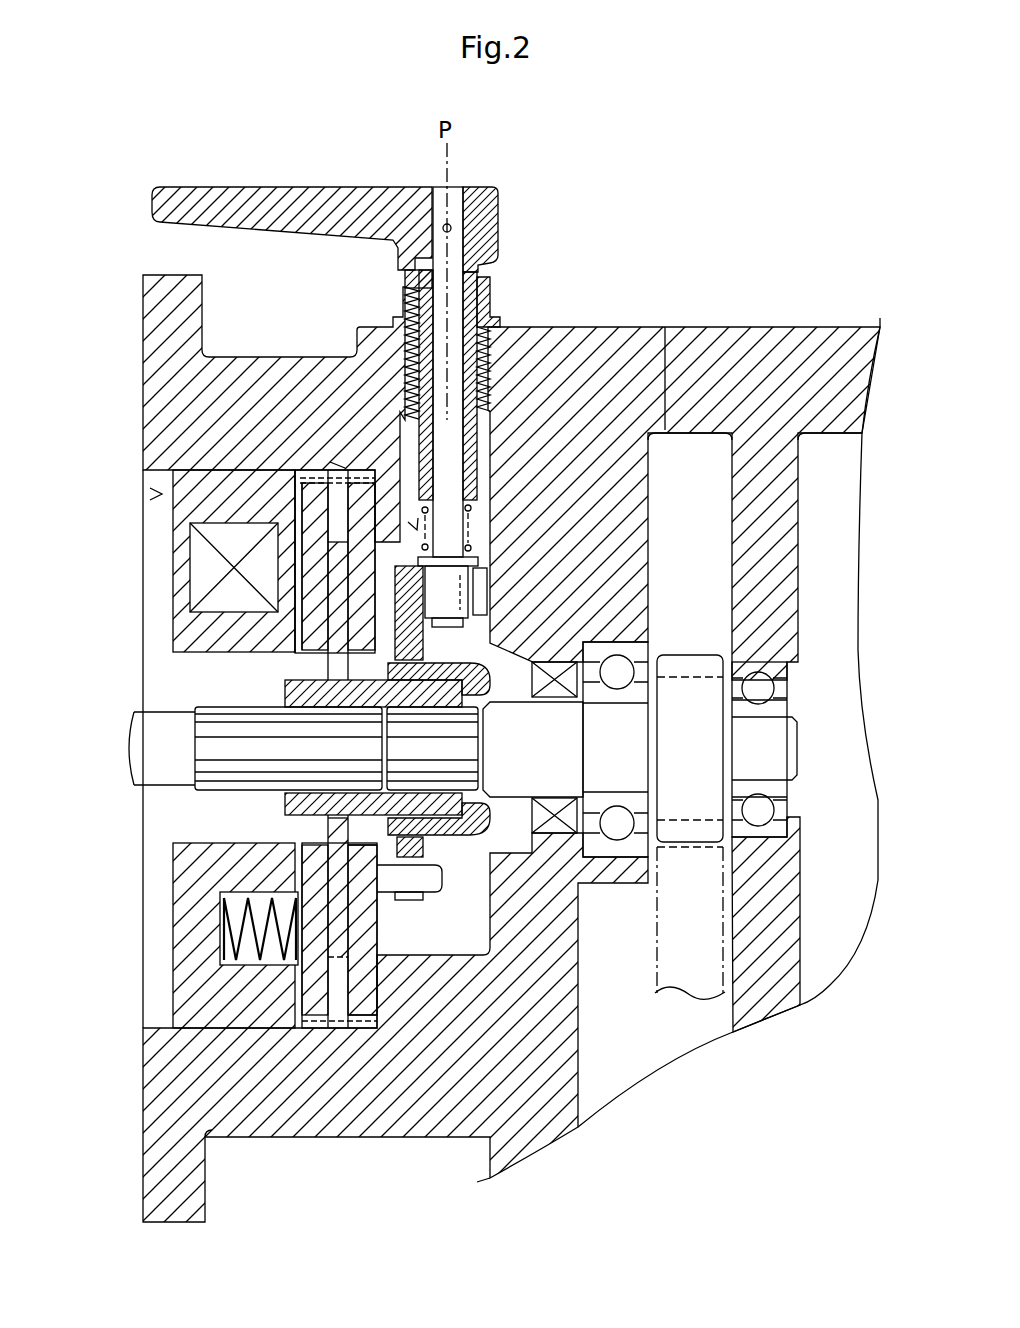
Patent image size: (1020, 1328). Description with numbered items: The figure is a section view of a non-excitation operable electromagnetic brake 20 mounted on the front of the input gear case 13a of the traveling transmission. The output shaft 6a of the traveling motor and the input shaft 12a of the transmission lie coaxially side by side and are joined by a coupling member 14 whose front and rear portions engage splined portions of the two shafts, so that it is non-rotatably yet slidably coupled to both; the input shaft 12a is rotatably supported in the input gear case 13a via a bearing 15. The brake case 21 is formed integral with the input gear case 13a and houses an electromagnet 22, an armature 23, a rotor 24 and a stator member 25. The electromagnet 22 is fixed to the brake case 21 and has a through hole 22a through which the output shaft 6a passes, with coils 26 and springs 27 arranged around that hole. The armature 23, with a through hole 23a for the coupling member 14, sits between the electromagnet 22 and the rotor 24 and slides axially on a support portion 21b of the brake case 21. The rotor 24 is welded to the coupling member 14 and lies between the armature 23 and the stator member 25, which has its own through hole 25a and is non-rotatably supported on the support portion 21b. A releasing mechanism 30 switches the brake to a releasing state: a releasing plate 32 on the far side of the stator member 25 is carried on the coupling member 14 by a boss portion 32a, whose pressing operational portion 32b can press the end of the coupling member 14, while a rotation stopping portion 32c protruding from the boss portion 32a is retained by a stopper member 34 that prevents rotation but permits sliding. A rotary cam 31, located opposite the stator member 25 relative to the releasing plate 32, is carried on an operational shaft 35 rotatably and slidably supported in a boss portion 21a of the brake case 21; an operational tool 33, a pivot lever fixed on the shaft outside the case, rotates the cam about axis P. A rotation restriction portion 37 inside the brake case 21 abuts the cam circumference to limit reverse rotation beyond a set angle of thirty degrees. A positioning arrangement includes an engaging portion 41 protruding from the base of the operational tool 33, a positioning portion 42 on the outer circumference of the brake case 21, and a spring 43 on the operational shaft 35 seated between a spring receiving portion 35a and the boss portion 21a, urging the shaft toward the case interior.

The operational tool 33 is at (305, 182).
The operational shaft 35 is at (458, 207).
The spring receiving portion 35a is at (487, 552).
The engaging portion 41 is at (405, 283).
The positioning portion 42 is at (483, 305).
The spring 43 is at (468, 508).
The brake case 21 is at (253, 370).
The boss portion 21a is at (405, 353).
The support portion 21b is at (338, 470).
The input gear case 13a is at (610, 343).
The non-excitation operable electromagnetic brake 20 is at (160, 494).
The releasing mechanism 30 is at (417, 528).
The electromagnet 22 is at (183, 507).
The through hole 22a is at (203, 652).
The coil 26 is at (198, 580).
The spring 27 is at (218, 918).
The rotation restriction portion 37 is at (482, 585).
The rotary cam 31 is at (450, 605).
The releasing plate 32 is at (410, 647).
The boss portion 32a is at (478, 850).
The pressing operational portion 32b is at (482, 680).
The rotation stopping portion 32c is at (403, 897).
The stopper member 34 is at (430, 873).
The coupling member 14 is at (297, 705).
The output shaft 6a is at (148, 768).
The bearing 15 is at (782, 707).
The input shaft 12a is at (788, 737).
The armature 23 is at (313, 985).
The through hole 23a is at (317, 653).
The rotor 24 is at (343, 945).
The stator member 25 is at (363, 963).
The through hole 25a is at (332, 830).